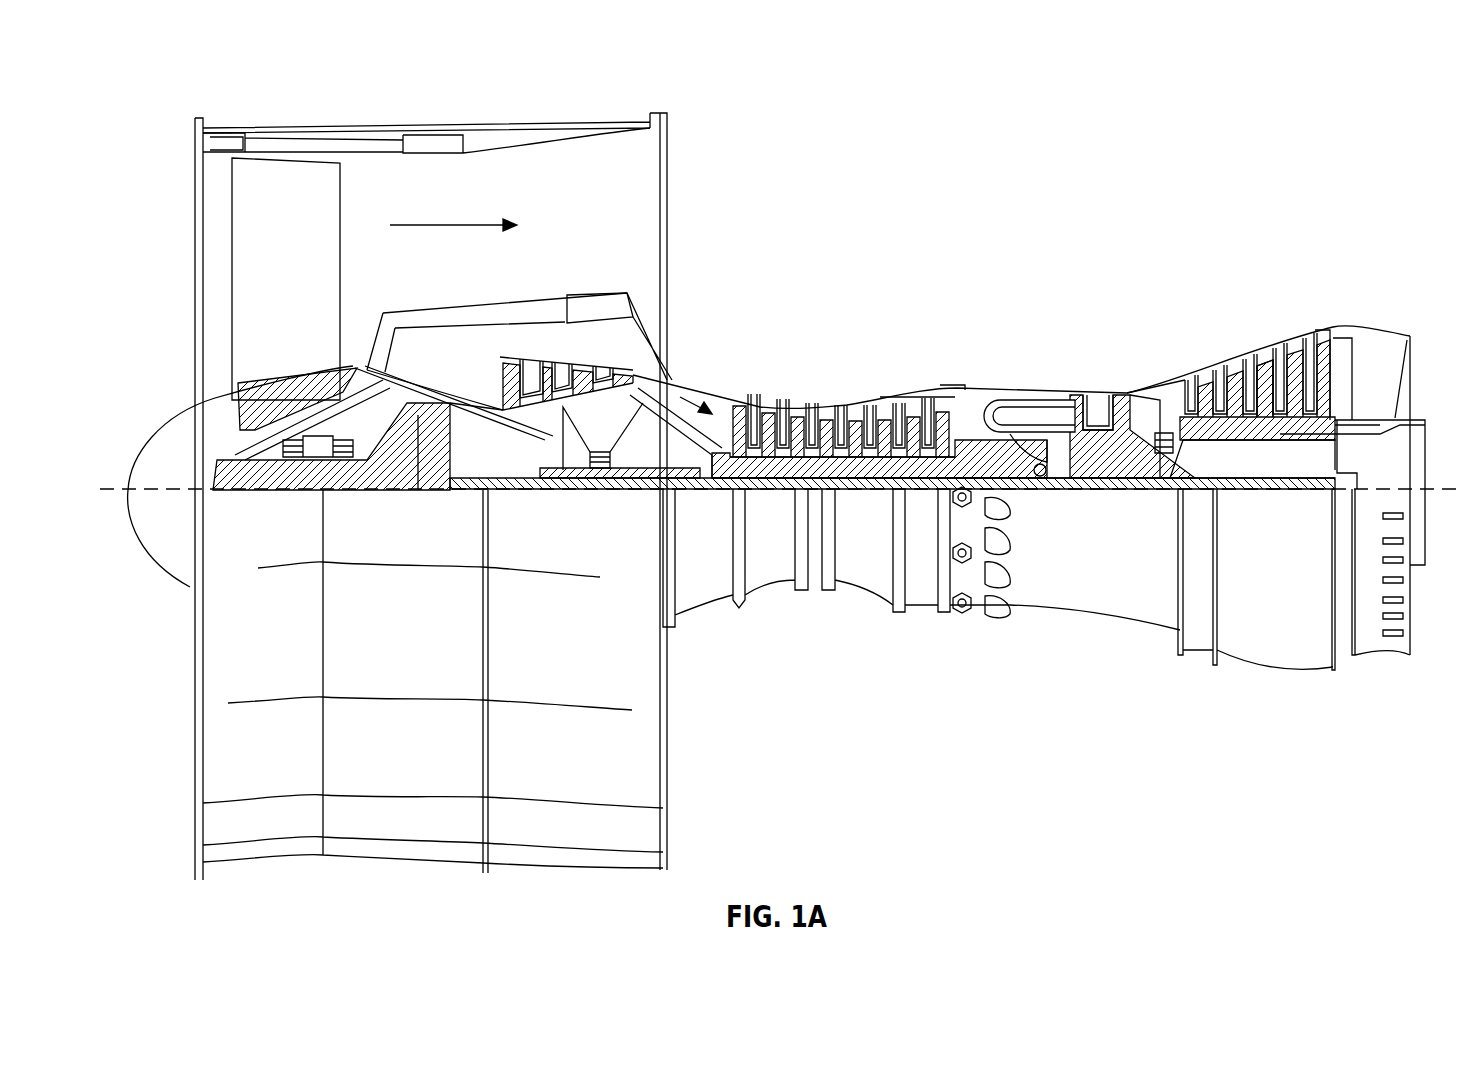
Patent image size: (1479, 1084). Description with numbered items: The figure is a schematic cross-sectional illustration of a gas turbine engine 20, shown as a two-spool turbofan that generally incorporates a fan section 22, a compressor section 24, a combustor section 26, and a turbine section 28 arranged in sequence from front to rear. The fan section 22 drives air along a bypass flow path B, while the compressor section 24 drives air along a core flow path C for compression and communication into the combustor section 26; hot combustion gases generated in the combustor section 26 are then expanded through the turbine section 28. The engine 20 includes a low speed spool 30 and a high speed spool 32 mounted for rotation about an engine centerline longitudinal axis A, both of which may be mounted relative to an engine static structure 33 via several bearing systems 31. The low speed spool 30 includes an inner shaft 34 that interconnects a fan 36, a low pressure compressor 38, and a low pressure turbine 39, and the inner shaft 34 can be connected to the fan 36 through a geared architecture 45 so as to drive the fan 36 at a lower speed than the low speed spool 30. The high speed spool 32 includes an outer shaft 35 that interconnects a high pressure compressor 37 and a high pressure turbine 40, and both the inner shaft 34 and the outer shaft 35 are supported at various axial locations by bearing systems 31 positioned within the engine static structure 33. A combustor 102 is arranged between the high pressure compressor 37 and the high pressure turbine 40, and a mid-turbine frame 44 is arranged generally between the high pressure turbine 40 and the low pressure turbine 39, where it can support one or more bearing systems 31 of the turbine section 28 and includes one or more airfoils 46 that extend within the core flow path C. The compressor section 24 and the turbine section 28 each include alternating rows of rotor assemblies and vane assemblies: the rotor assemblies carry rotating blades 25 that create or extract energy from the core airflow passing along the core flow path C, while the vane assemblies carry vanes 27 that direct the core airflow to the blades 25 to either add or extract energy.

The gas turbine engine 20 is at (1168, 180).
The fan section 22 is at (293, 113).
The compressor section 24 is at (743, 362).
The blades 25 is at (510, 378).
The combustor section 26 is at (993, 360).
The vanes 27 is at (562, 358).
The turbine section 28 is at (1261, 305).
The low speed spool 30 is at (885, 496).
The bearing systems 31 is at (295, 462).
The high speed spool 32 is at (950, 418).
The engine static structure 33 is at (933, 600).
The inner shaft 34 is at (680, 492).
The outer shaft 35 is at (1040, 480).
The fan 36 is at (312, 257).
The high pressure compressor 37 is at (842, 462).
The low pressure compressor 38 is at (600, 337).
The low pressure turbine 39 is at (1267, 348).
The high pressure turbine 40 is at (1100, 396).
The mid-turbine frame 44 is at (1168, 378).
The geared architecture 45 is at (435, 462).
The airfoils 46 is at (1152, 405).
The combustor 102 is at (1015, 408).
The engine centerline longitudinal axis A is at (1440, 486).
The bypass flow path B is at (458, 224).
The core flow path C is at (698, 396).